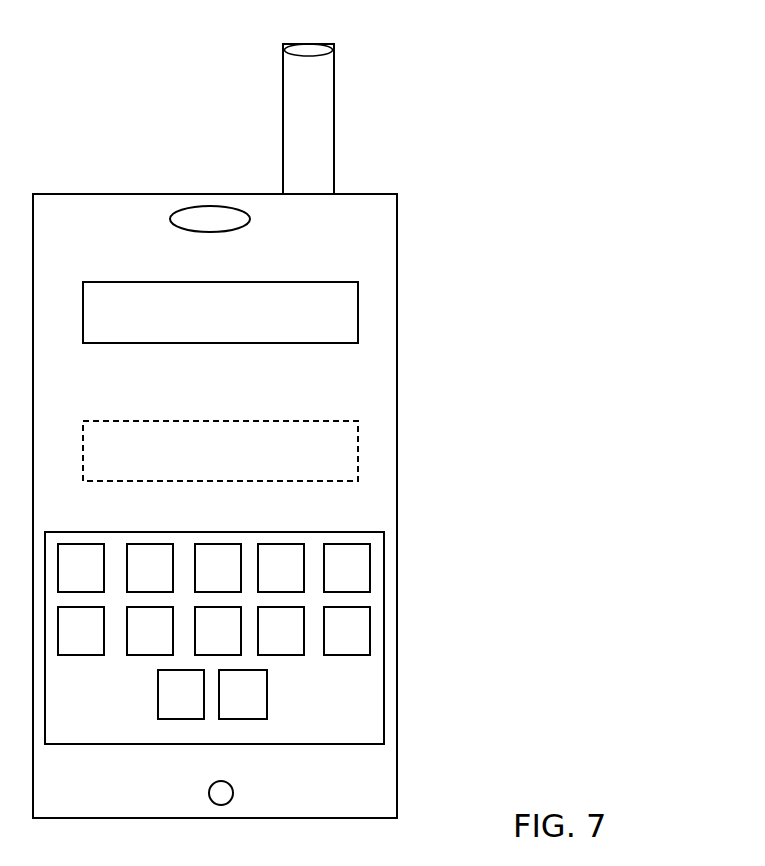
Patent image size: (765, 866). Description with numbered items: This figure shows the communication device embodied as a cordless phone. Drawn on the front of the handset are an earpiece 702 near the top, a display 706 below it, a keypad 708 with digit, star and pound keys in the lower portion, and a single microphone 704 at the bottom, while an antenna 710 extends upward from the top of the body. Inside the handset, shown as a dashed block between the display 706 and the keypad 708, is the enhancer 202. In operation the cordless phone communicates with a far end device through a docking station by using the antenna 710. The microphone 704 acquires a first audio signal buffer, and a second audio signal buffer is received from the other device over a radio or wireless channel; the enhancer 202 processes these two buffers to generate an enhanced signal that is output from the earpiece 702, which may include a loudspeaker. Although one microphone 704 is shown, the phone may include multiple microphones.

The antenna 710 is at (337, 93).
The earpiece 702 is at (250, 218).
The display 706 is at (220, 312).
The enhancer 202 is at (220, 451).
The keypad 708 is at (384, 638).
The microphone 704 is at (233, 793).